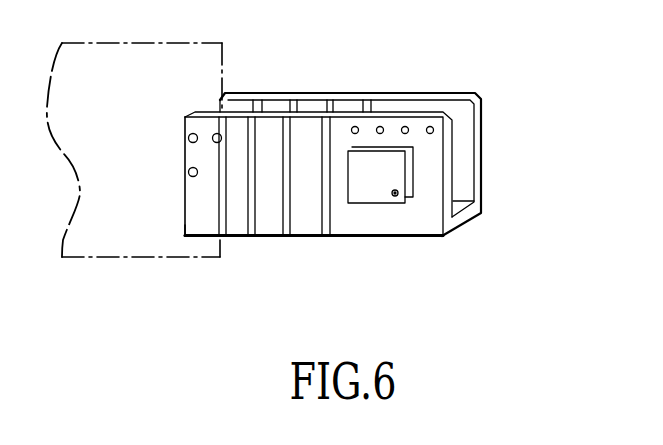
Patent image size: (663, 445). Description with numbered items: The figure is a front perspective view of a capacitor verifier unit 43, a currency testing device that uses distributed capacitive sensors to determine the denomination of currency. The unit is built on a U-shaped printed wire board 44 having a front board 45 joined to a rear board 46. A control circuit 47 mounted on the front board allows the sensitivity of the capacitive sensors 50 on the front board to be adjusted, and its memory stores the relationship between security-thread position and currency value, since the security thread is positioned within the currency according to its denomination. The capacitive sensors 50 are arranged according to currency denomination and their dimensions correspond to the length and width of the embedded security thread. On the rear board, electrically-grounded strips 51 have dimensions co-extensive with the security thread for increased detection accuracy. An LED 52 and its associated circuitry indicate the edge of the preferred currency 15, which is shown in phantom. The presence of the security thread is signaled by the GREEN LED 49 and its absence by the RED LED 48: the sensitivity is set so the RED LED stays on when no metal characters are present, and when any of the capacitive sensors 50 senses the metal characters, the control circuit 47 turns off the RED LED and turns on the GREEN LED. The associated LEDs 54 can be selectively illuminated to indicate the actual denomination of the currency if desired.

The currency 15 is at (222, 43).
The capacitor verifier unit 43 is at (523, 281).
The U-shaped printed wire board 44 is at (202, 237).
The front board 45 is at (188, 138).
The rear board 46 is at (483, 97).
The control circuit 47 is at (357, 182).
The RED LED 48 is at (185, 128).
The GREEN LED 49 is at (217, 133).
The capacitive sensors 50 is at (328, 245).
The electrically-grounded strips 51 is at (366, 74).
The LED 52 is at (188, 172).
The associated LEDs 54 is at (345, 113).